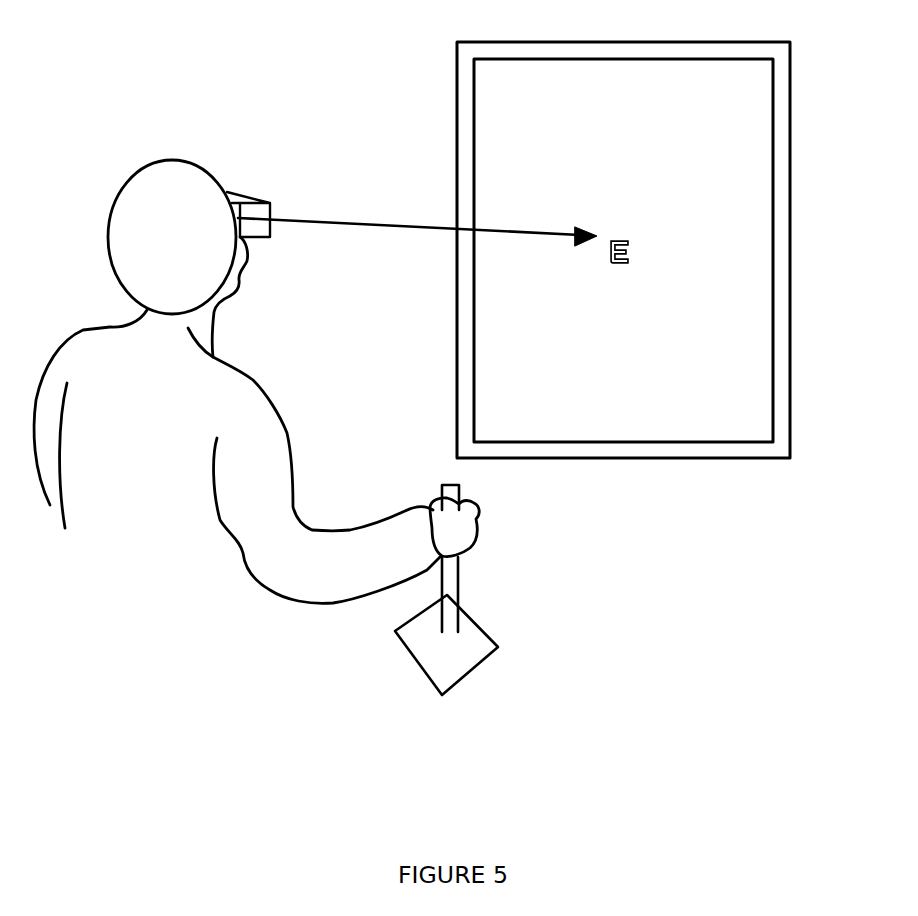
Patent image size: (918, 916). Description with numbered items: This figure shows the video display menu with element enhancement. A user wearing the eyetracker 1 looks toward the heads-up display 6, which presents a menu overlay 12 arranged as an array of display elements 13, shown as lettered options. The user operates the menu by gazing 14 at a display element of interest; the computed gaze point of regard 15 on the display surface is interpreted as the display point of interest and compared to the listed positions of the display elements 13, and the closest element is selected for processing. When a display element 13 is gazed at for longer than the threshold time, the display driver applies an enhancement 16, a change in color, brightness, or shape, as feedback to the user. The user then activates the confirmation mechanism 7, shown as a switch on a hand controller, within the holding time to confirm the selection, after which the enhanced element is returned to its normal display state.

The eyetracker 1 is at (250, 193).
The heads-up display 6 is at (792, 62).
The confirmation mechanism 7 is at (485, 522).
The menu overlay 12 is at (742, 160).
The display element 13 is at (637, 247).
The gaze 14 is at (428, 237).
The gaze point of regard 15 is at (600, 225).
The enhancement 16 is at (637, 258).